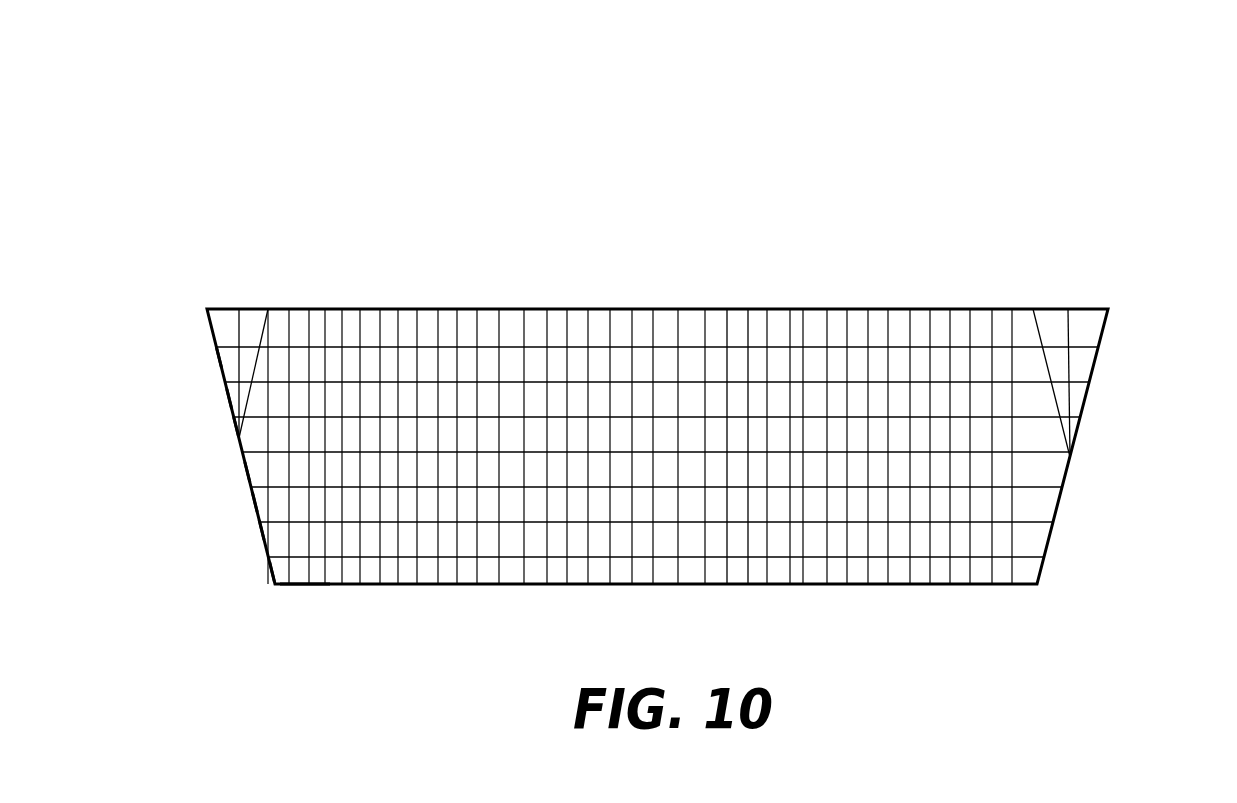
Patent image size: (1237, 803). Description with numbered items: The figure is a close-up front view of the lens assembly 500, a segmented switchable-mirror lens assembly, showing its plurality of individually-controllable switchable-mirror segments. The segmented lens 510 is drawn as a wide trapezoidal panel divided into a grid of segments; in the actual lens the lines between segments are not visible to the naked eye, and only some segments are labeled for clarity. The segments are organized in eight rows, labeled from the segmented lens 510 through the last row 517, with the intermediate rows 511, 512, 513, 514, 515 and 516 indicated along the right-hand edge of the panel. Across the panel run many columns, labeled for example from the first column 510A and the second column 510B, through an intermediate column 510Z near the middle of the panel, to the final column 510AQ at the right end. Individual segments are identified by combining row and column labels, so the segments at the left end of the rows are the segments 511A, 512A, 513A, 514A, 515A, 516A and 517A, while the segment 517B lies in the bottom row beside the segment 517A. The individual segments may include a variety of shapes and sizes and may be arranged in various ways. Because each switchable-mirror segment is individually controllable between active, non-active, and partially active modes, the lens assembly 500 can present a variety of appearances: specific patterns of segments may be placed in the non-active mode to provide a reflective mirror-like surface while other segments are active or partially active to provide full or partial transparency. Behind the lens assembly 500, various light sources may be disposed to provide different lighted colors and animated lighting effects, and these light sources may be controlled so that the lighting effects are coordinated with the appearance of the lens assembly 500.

The lens assembly 500 is at (283, 85).
The segmented lens 510 is at (1120, 321).
The segment column 510A is at (223, 315).
The segment column 510B is at (257, 315).
The segment column 510Z is at (737, 315).
The segment column 510AQ is at (1087, 315).
The segment row 511 is at (1105, 360).
The segment row 512 is at (1092, 402).
The segment row 513 is at (1087, 438).
The segment row 514 is at (1080, 477).
The segment row 515 is at (1070, 509).
The segment row 516 is at (1062, 542).
The segment row 517 is at (1057, 577).
The switchable-mirror segment 511A is at (227, 358).
The switchable-mirror segment 512A is at (236, 399).
The switchable-mirror segment 513A is at (238, 427).
The switchable-mirror segment 514A is at (258, 472).
The switchable-mirror segment 515A is at (263, 502).
The switchable-mirror segment 516A is at (265, 530).
The switchable-mirror segment 517A is at (276, 572).
The switchable-mirror segment 517B is at (303, 577).